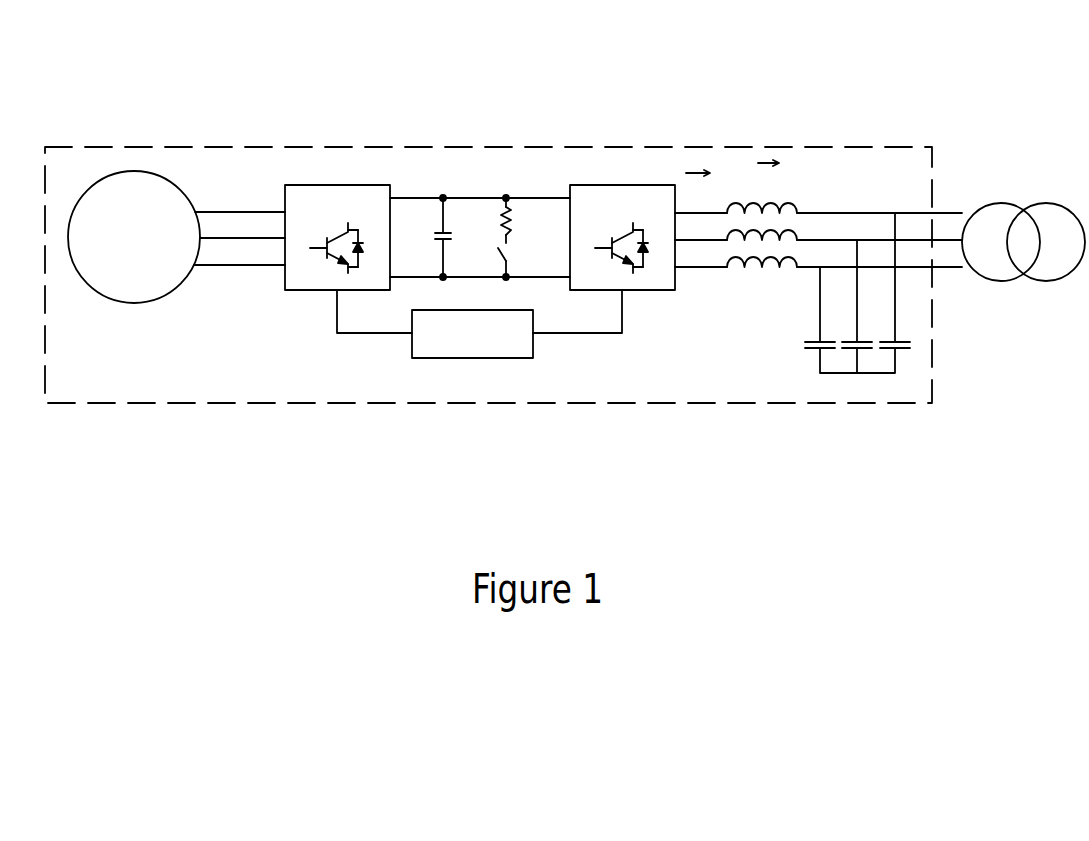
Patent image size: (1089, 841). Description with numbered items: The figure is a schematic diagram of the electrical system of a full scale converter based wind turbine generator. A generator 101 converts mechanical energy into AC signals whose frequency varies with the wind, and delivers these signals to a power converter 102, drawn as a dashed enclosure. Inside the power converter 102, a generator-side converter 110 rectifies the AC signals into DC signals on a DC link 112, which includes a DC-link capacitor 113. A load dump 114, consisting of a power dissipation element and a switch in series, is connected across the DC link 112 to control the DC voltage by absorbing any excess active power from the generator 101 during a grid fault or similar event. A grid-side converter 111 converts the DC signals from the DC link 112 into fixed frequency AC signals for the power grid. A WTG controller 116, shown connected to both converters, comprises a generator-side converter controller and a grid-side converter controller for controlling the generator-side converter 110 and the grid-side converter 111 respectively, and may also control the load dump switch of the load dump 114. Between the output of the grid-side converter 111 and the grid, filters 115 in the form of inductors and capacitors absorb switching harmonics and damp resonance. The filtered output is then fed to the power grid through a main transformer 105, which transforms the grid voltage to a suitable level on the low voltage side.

The generator 101 is at (114, 304).
The power converter 102 is at (286, 142).
The main transformer 105 is at (1027, 287).
The generator-side converter 110 is at (308, 290).
The grid-side converter 111 is at (648, 290).
The DC link 112 is at (478, 198).
The DC-link capacitor 113 is at (437, 223).
The load dump 114 is at (513, 217).
The filters 115 is at (753, 302).
The WTG controller 116 is at (473, 358).